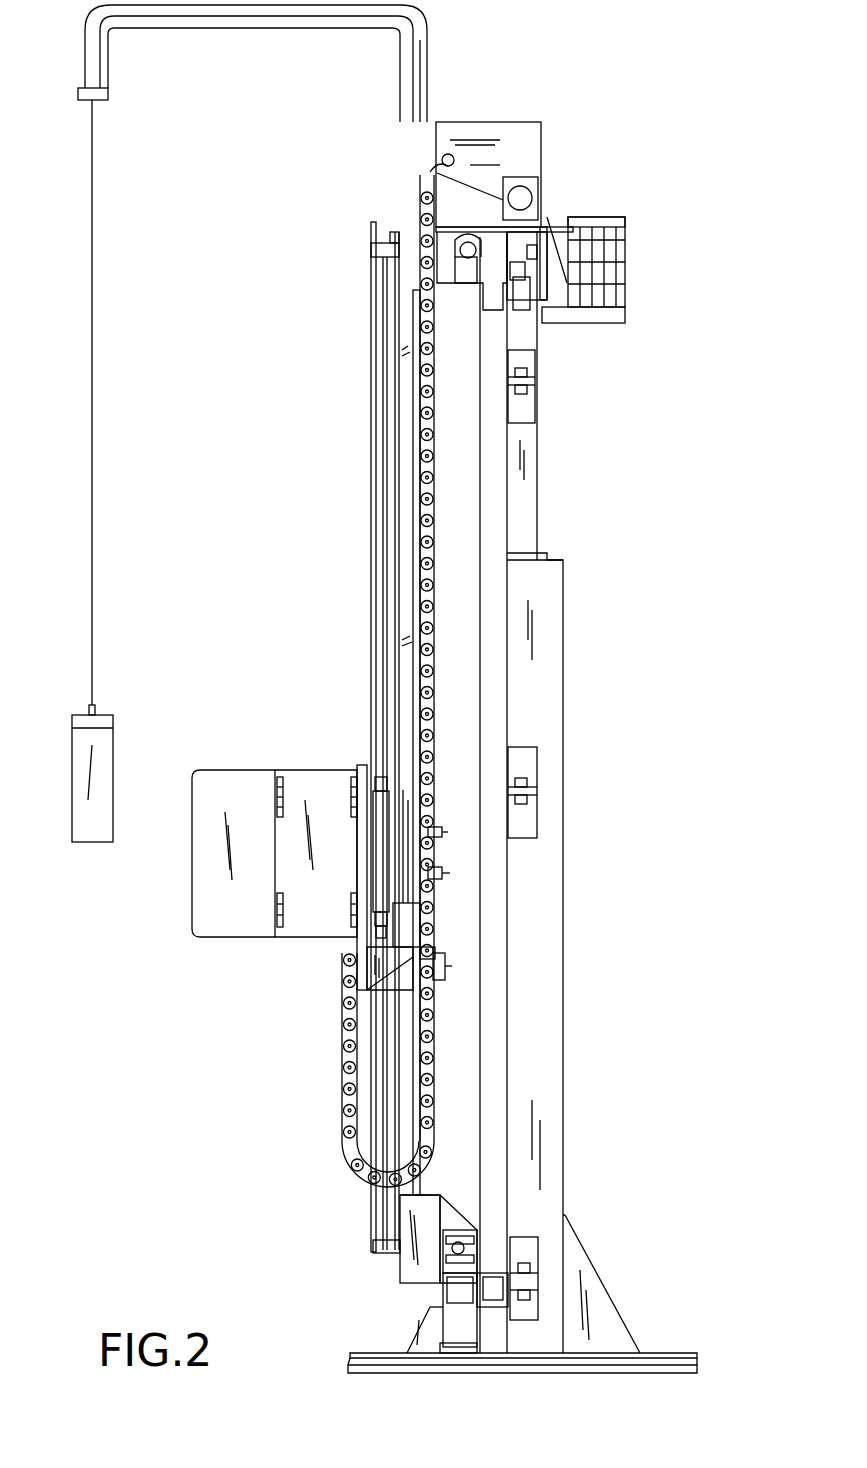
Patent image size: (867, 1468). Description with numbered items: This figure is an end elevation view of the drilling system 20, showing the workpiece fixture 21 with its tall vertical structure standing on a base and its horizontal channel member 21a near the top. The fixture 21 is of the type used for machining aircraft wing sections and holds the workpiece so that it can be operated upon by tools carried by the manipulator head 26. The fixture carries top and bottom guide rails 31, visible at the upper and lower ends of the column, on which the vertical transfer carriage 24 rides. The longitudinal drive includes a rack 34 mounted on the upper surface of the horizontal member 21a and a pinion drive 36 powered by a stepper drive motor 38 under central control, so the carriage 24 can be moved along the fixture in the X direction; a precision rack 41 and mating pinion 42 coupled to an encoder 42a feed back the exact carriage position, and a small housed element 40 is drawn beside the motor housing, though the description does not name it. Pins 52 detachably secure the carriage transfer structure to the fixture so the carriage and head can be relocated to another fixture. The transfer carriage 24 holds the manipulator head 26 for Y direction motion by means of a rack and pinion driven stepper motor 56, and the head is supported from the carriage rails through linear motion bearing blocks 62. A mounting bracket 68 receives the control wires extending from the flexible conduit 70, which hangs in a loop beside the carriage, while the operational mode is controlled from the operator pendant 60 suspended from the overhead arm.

The drilling system 20 is at (640, 600).
The workpiece fixture 21 is at (505, 527).
The horizontal channel member 21a is at (523, 288).
The vertical transfer carriage 24 is at (366, 357).
The manipulator head 26 is at (298, 918).
The guide rails 31 is at (470, 250).
The rack 34 is at (517, 272).
The pinion drive 36 is at (528, 250).
The stepper drive motor 38 is at (519, 198).
The pulley 40 is at (507, 228).
The precision rack 41 is at (546, 266).
The pinion 42 is at (383, 700).
The encoder 42a is at (549, 257).
The pins 52 is at (535, 395).
The stepper motor 56 is at (443, 962).
The operator pendant 60 is at (70, 785).
The linear motion bearing blocks 62 is at (382, 770).
The mounting bracket 68 is at (378, 960).
The flexible conduit 70 is at (434, 610).